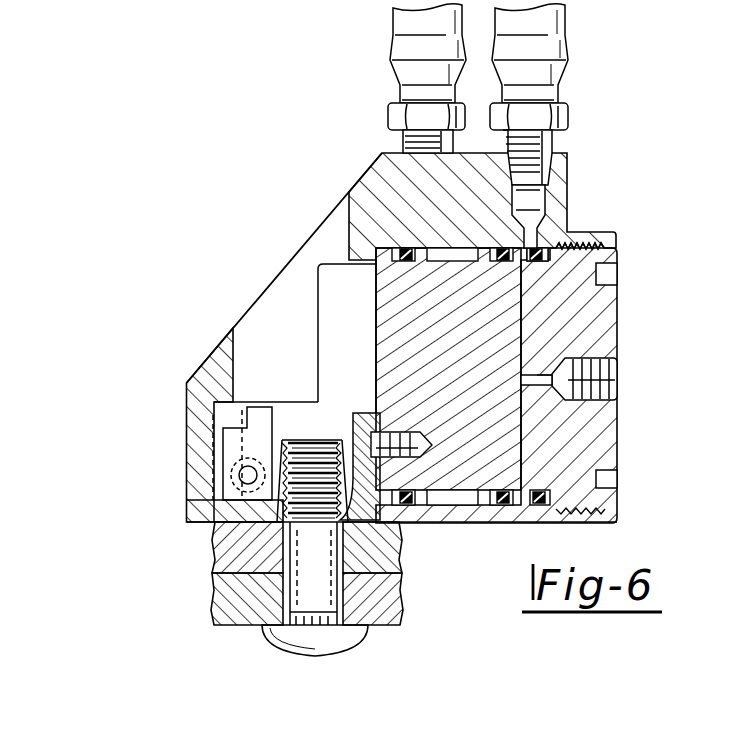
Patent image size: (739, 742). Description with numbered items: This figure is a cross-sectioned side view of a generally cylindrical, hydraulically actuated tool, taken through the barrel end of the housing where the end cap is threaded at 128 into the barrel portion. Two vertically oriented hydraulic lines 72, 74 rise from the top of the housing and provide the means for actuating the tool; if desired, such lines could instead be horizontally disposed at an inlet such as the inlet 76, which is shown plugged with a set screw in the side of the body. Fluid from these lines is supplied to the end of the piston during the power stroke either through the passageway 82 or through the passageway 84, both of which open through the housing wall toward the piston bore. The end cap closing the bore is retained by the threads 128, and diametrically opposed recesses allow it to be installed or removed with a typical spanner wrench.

The hydraulic line 72 is at (567, 42).
The hydraulic line 74 is at (393, 30).
The inlet 76 is at (602, 362).
The passageway 82 is at (542, 251).
The passageway 84 is at (536, 388).
The threads 128 is at (600, 502).